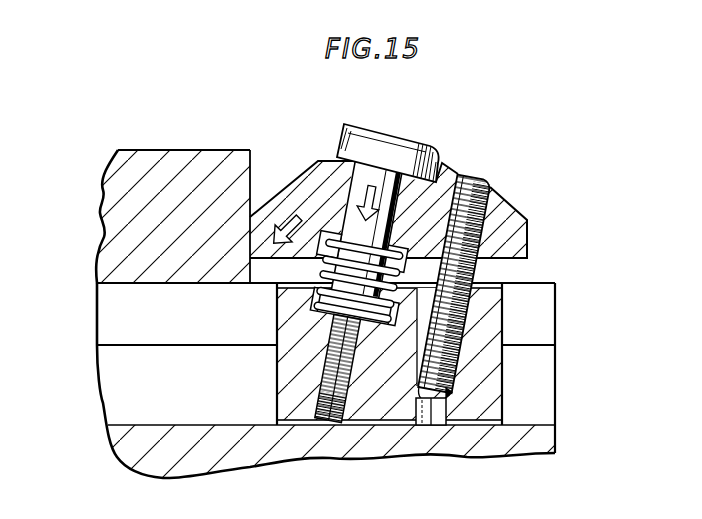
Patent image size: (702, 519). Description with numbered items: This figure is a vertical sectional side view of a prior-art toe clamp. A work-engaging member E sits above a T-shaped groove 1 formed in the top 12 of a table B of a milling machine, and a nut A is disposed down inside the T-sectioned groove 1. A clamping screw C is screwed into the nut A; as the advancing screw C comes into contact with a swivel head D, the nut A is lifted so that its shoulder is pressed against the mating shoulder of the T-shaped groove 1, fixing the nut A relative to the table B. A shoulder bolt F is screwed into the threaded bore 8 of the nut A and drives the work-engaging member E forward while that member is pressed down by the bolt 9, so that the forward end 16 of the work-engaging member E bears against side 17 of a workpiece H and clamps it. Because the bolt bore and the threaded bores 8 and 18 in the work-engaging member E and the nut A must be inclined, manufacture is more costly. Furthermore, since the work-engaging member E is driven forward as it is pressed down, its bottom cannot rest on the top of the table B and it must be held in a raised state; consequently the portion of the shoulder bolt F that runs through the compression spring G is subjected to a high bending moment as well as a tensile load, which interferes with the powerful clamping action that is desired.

The workpiece H is at (136, 150).
The forward end 16 is at (250, 233).
The side 17 is at (252, 160).
The top 12 is at (147, 280).
The nut A is at (503, 372).
The T-shaped groove 1 is at (180, 424).
The table B is at (121, 464).
The work-engaging member E is at (318, 164).
The bolt 9 is at (444, 162).
The threaded bore 18 is at (452, 352).
The shoulder bolt F is at (423, 135).
The compression spring G is at (398, 268).
The threaded bore 8 is at (330, 427).
The clamping screw C is at (490, 270).
The swivel head D is at (449, 362).